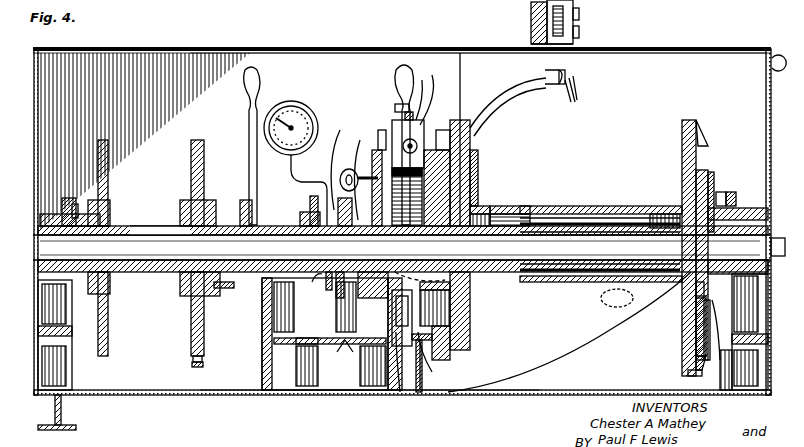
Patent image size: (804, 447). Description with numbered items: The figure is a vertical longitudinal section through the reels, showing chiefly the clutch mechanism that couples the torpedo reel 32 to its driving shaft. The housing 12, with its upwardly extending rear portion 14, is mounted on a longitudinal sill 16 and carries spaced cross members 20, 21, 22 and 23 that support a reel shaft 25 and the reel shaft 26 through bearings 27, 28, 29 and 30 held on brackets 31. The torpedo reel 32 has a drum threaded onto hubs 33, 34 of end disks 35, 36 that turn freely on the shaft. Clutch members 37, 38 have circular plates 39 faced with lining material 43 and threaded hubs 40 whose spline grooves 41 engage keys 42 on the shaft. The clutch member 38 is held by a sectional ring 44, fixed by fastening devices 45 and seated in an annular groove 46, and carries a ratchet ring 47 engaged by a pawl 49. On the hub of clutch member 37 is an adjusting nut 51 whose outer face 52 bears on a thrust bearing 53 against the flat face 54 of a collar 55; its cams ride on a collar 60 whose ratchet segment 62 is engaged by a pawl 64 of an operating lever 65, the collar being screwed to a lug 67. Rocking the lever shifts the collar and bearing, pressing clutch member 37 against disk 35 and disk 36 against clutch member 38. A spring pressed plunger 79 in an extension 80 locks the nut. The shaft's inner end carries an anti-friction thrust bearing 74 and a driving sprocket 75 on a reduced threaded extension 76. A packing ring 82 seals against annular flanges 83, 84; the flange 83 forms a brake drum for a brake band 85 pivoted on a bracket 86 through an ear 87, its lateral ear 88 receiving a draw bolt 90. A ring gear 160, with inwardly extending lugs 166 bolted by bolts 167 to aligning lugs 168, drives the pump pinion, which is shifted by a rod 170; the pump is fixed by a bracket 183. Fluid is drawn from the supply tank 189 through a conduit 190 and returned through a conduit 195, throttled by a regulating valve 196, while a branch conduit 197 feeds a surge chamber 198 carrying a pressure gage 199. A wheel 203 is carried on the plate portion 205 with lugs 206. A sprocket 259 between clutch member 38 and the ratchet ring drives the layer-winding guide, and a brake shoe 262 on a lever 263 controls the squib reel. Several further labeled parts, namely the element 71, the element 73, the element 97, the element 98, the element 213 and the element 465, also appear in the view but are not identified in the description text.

The housing 12 is at (748, 48).
The upwardly extending rear portion 14 is at (194, 52).
The longitudinal sill 16 is at (61, 434).
The cross member 20 is at (72, 392).
The cross member 21 is at (262, 374).
The cross member 22 is at (360, 380).
The cross member 23 is at (732, 370).
The reel shaft 25 is at (156, 234).
The reel shaft 26 is at (588, 233).
The bearing 27 is at (62, 210).
The bearing 28 is at (250, 284).
The bearing 29 is at (368, 212).
The bearing 30 is at (738, 238).
The bracket 31 is at (758, 326).
The torpedo reel 32 is at (562, 206).
The hub 33 is at (510, 205).
The hub 34 is at (666, 208).
The end disk 35 is at (476, 158).
The end disk 36 is at (690, 358).
The clutch member 37 is at (450, 340).
The clutch member 38 is at (696, 306).
The circular plate 39 is at (706, 172).
The threaded hub 40 is at (726, 192).
The spline groove 41 is at (736, 202).
The key 42 is at (617, 298).
The lining material 43 is at (172, 396).
The sectional ring 44 is at (720, 340).
The fastening device 45 is at (696, 290).
The annular groove 46 is at (782, 247).
The ratchet ring 47 is at (690, 372).
The pawl 49 is at (716, 190).
The adjusting nut 51 is at (510, 192).
The outer face 52 is at (483, 205).
The thrust bearing 53 is at (474, 186).
The flat face 54 is at (402, 270).
The collar 55 is at (410, 318).
The collar 60 is at (372, 300).
The ratchet segment 62 is at (378, 136).
The pawl 64 is at (374, 152).
The operating lever 65 is at (412, 112).
The lug 67 is at (359, 172).
The lever 71 is at (396, 96).
The lever fulcrum 73 is at (396, 110).
The anti-friction thrust bearing 74 is at (345, 346).
The driving sprocket 75 is at (342, 298).
The reduced threaded extension 76 is at (330, 292).
The spring pressed plunger 79 is at (452, 290).
The extension 80 is at (450, 304).
The packing ring 82 is at (700, 148).
The annular flange 83 is at (412, 144).
The annular flange 84 is at (706, 138).
The brake band 85 is at (450, 364).
The bracket 86 is at (440, 376).
The ear 87 is at (420, 392).
The lateral ear 88 is at (426, 100).
The draw bolt 90 is at (431, 96).
The hand lever 97 is at (242, 96).
The valve 98 is at (310, 214).
The ring gear 160 is at (454, 120).
The inwardly extending lug 166 is at (462, 152).
The bolt 167 is at (454, 152).
The aligning lug 168 is at (460, 152).
The rod 170 is at (320, 282).
The bracket 183 is at (400, 392).
The supply tank 189 is at (680, 58).
The conduit 190 is at (536, 298).
The conduit 195 is at (512, 94).
The regulating valve 196 is at (346, 169).
The branch conduit 197 is at (343, 155).
The surge chamber 198 is at (312, 200).
The pressure gage 199 is at (290, 102).
The wheel 203 is at (531, 16).
The plate portion 205 is at (578, 14).
The lug 206 is at (574, 32).
The switch housing 213 is at (508, 4).
The sprocket 259 is at (696, 336).
The brake shoe 262 is at (193, 358).
The lever 263 is at (192, 364).
The plate 465 is at (309, 347).